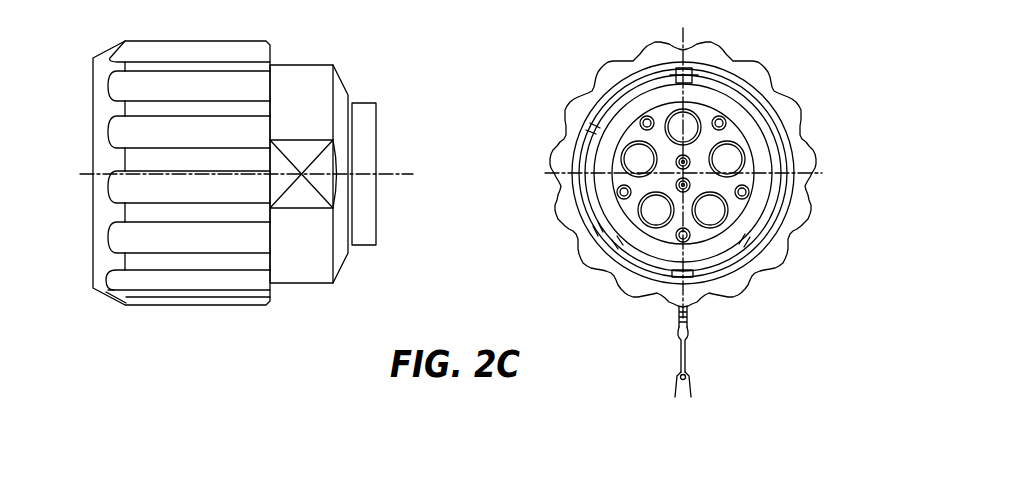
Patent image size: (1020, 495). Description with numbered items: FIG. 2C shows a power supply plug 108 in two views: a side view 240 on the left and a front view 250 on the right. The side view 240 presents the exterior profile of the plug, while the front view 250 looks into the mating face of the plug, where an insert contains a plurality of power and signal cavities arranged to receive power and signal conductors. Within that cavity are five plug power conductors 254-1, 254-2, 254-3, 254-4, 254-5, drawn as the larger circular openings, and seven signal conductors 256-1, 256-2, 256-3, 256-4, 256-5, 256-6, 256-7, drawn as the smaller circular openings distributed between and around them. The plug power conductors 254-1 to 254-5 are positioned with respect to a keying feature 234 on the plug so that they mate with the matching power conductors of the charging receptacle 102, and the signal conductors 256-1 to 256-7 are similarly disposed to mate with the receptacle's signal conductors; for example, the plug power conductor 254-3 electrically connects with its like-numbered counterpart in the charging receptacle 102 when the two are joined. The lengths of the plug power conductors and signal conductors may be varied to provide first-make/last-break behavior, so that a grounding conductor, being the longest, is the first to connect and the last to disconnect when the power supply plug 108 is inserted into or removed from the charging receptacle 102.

The side view 240 is at (66, 88).
The charging receptacle 102 is at (196, 306).
The front view 250 is at (842, 46).
The power supply plug 108 is at (590, 92).
The keying feature 234 is at (677, 68).
The plug power conductor 254-1 is at (694, 113).
The plug power conductor 254-2 is at (621, 159).
The plug power conductor 254-3 is at (745, 156).
The plug power conductor 254-4 is at (727, 218).
The plug power conductor 254-5 is at (644, 224).
The signal conductor 256-1 is at (725, 118).
The signal conductor 256-2 is at (644, 116).
The signal conductor 256-3 is at (689, 157).
The signal conductor 256-4 is at (750, 191).
The signal conductor 256-5 is at (619, 198).
The signal conductor 256-6 is at (690, 192).
The signal conductor 256-7 is at (690, 242).